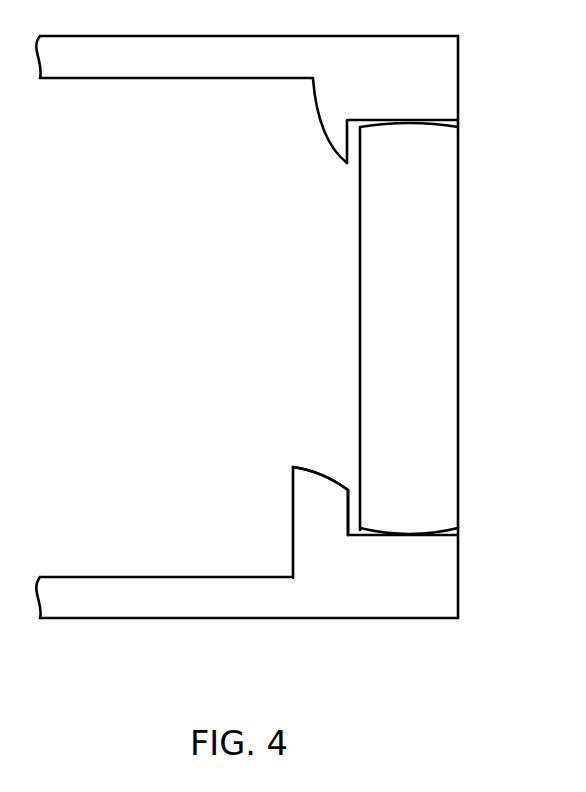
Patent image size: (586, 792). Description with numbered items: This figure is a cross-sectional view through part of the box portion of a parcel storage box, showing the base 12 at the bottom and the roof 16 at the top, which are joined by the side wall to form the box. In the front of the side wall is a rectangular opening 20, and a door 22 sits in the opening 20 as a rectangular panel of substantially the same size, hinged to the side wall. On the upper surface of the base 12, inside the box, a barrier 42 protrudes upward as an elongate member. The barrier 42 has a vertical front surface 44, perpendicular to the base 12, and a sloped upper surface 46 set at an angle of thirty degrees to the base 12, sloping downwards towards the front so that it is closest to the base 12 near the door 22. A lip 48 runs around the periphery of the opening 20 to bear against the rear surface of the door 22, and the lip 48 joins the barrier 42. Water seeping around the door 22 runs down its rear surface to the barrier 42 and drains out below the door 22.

The base 12 is at (132, 597).
The roof 16 is at (143, 57).
The opening 20 is at (330, 310).
The door 22 is at (445, 322).
The barrier 42 is at (312, 500).
The front surface 44 is at (342, 512).
The upper surface 46 is at (327, 475).
The lip 48 is at (337, 135).